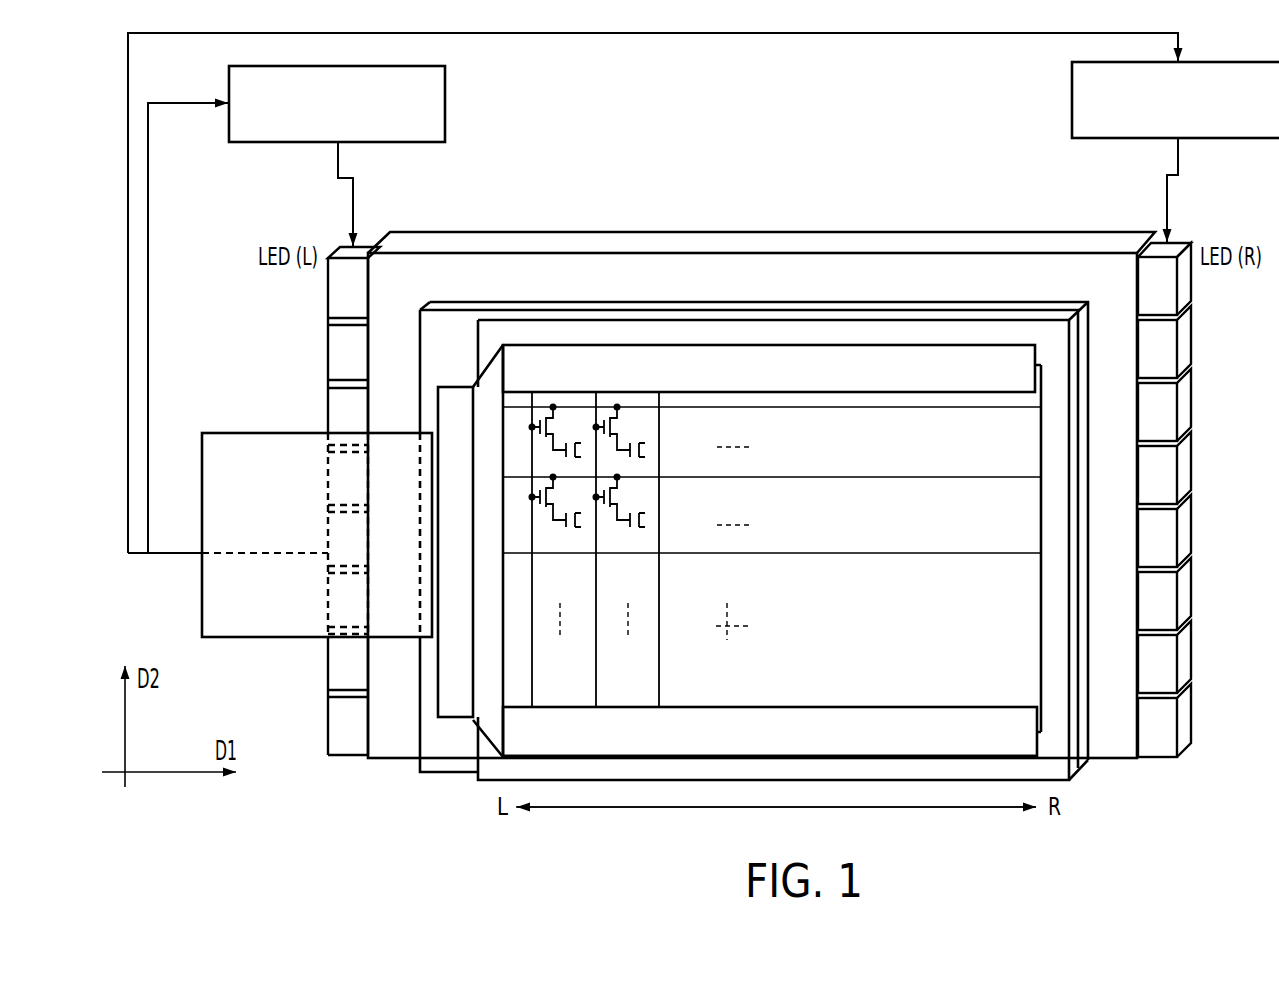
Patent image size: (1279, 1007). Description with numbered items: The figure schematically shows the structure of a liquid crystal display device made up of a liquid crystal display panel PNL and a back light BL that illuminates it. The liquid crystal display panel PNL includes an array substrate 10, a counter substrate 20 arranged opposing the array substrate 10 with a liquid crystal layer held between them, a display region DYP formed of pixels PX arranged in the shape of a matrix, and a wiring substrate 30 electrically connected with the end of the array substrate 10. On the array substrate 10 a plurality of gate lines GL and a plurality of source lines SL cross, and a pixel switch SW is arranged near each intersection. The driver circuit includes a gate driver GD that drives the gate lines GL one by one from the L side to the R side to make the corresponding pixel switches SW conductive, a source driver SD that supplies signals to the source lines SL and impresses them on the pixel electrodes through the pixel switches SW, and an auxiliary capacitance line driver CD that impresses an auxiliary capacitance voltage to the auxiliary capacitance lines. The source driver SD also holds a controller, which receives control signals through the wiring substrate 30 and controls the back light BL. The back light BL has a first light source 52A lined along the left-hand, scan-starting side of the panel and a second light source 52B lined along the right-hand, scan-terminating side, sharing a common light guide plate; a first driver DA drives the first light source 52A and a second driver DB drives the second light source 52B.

The first driver DA is at (447, 103).
The second driver DB is at (1072, 100).
The back light BL is at (832, 232).
The liquid crystal display panel PNL is at (839, 519).
The array substrate 10 is at (932, 302).
The counter substrate 20 is at (995, 310).
The source driver SD is at (457, 397).
The auxiliary capacitance line driver CD is at (655, 360).
The gate driver GD is at (655, 745).
The display region DYP is at (880, 522).
The source line SL is at (685, 410).
The gate line GL is at (534, 677).
The pixel PX is at (589, 395).
The pixel switch SW is at (545, 418).
The first light source 52A is at (328, 347).
The second light source 52B is at (1193, 347).
The wiring substrate 30 is at (202, 600).